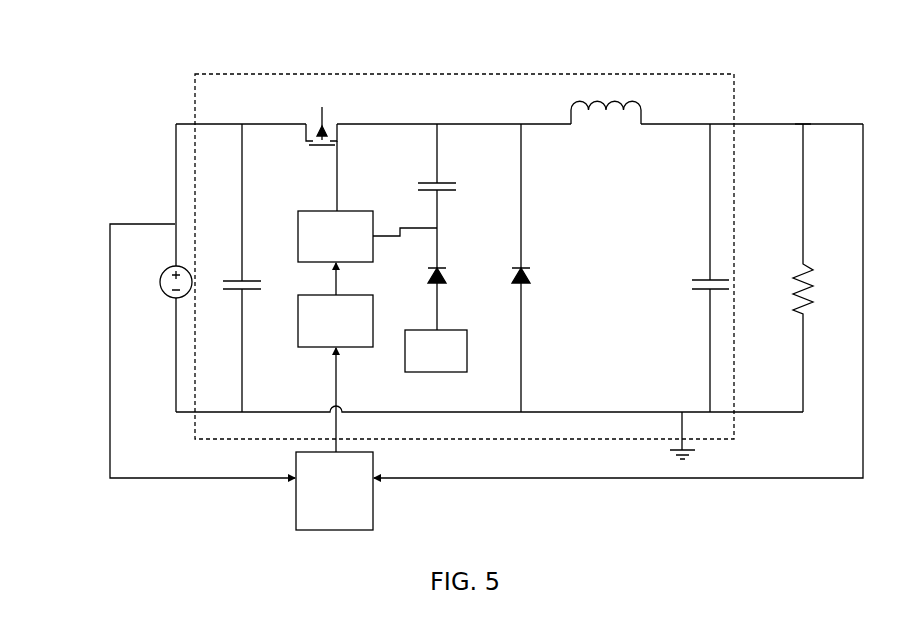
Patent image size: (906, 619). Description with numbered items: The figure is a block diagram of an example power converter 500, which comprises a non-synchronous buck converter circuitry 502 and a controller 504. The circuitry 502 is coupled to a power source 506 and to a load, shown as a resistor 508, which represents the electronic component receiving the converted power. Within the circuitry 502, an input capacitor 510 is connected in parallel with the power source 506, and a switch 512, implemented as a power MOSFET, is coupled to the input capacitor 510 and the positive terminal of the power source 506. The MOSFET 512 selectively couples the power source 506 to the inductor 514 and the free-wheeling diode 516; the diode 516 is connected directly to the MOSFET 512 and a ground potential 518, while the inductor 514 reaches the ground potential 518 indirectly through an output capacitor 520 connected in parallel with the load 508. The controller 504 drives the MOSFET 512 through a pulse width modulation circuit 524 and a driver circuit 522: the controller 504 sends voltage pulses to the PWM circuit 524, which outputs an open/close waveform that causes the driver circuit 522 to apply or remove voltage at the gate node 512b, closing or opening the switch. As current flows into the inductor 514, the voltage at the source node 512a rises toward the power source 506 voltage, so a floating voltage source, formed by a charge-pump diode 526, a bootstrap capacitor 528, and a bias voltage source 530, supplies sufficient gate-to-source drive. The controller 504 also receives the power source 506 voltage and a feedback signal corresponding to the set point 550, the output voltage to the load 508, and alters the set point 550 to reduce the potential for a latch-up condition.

The power converter 500 is at (80, 92).
The non-synchronous buck converter circuitry 502 is at (693, 74).
The controller 504 is at (334, 439).
The power source 506 is at (167, 297).
The load 508 is at (792, 275).
The input capacitor 510 is at (232, 275).
The switch 512 is at (304, 143).
The source node 512a is at (375, 110).
The gate node 512b is at (337, 175).
The inductor 514 is at (571, 113).
The free-wheeling diode 516 is at (524, 267).
The ground potential 518 is at (725, 443).
The output capacitor 520 is at (690, 280).
The driver circuit 522 is at (367, 236).
The pulse width modulation circuit 524 is at (335, 305).
The charge-pump diode 526 is at (440, 267).
The bootstrap capacitor 528 is at (445, 183).
The bias voltage source 530 is at (436, 351).
The set point 550 is at (803, 123).